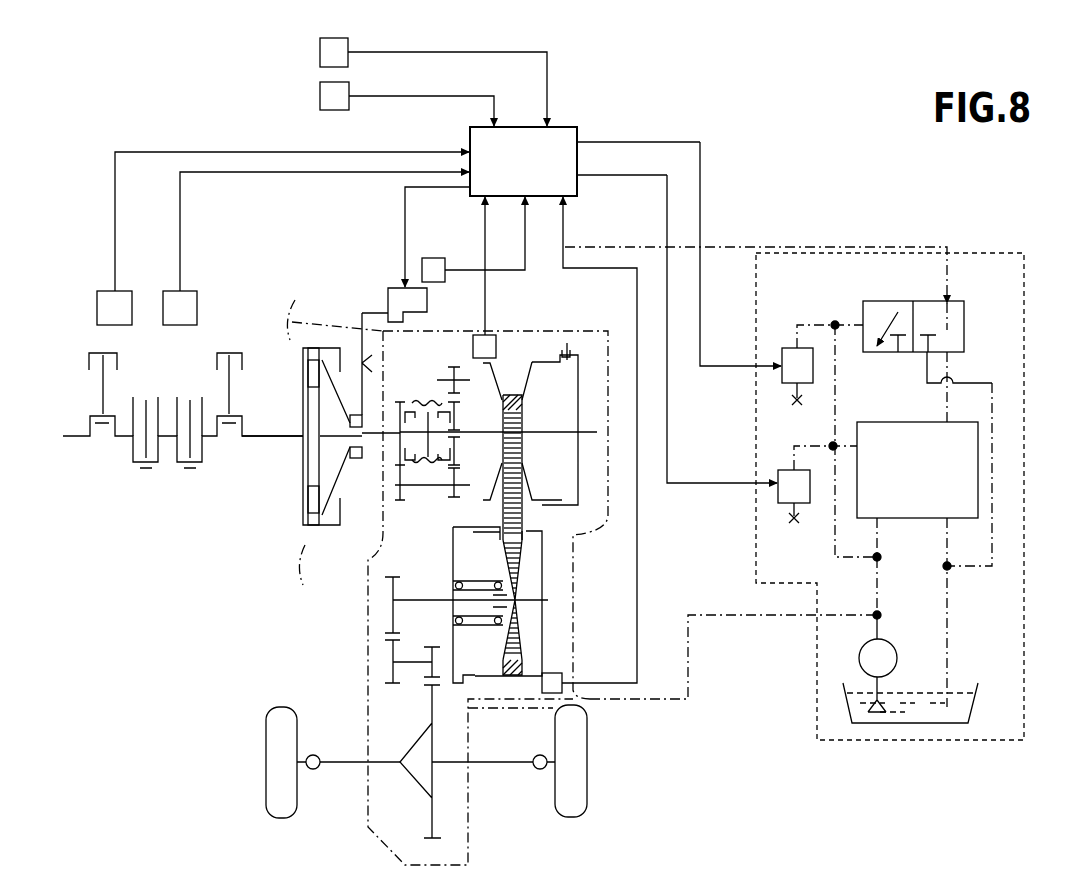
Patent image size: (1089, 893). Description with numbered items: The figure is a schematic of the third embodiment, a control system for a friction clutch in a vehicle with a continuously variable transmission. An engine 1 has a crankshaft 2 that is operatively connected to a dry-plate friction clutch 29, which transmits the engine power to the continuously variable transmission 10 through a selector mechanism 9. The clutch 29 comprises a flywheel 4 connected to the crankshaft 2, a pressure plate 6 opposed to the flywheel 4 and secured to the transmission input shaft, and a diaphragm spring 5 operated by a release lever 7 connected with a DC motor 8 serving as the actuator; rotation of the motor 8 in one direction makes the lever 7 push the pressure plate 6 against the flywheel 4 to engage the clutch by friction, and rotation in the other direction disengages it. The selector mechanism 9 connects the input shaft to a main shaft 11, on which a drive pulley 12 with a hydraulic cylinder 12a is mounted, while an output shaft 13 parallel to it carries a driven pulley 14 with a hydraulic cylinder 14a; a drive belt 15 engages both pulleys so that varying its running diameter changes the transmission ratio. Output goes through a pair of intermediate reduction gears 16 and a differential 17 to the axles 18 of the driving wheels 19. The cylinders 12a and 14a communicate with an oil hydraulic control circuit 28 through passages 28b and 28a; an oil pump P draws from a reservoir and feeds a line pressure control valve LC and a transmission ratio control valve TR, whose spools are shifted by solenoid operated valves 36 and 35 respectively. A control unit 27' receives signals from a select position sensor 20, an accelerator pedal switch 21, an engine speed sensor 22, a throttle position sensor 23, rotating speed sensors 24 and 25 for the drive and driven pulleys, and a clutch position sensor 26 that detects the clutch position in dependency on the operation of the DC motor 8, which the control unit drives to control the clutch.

The engine 1 is at (126, 468).
The crankshaft 2 is at (270, 434).
The flywheel 4 is at (303, 462).
The diaphragm spring 5 is at (345, 472).
The pressure plate 6 is at (308, 502).
The release lever 7 is at (358, 355).
The DC motor 8 is at (427, 300).
The selector mechanism 9 is at (422, 400).
The continuously variable transmission 10 is at (522, 422).
The main shaft 11 is at (480, 434).
The drive pulley 12 is at (493, 370).
The hydraulic cylinder 12a is at (570, 480).
The output shaft 13 is at (427, 599).
The driven pulley 14 is at (522, 542).
The hydraulic cylinder 14a is at (500, 576).
The drive belt 15 is at (498, 514).
The intermediate reduction gears 16 is at (380, 636).
The differential 17 is at (412, 746).
The axles 18 is at (503, 760).
The driving wheels 19 is at (588, 752).
The select position sensor 20 is at (320, 52).
The accelerator pedal switch 21 is at (320, 96).
The engine speed sensor 22 is at (197, 305).
The throttle position sensor 23 is at (97, 303).
The rotating speed sensor 24 is at (490, 335).
The rotating speed sensor 25 is at (549, 673).
The clutch position sensor 26 is at (433, 258).
The control unit 27' is at (535, 125).
The oil hydraulic control circuit 28 is at (826, 441).
The passage 28a is at (690, 682).
The passage 28b is at (637, 246).
The dry-plate friction clutch 29 is at (322, 344).
The solenoid operated valve 35 is at (790, 347).
The solenoid operated valve 36 is at (790, 469).
The transmission ratio control valve TR is at (905, 310).
The line pressure control valve LC is at (875, 422).
The oil pump P is at (910, 669).